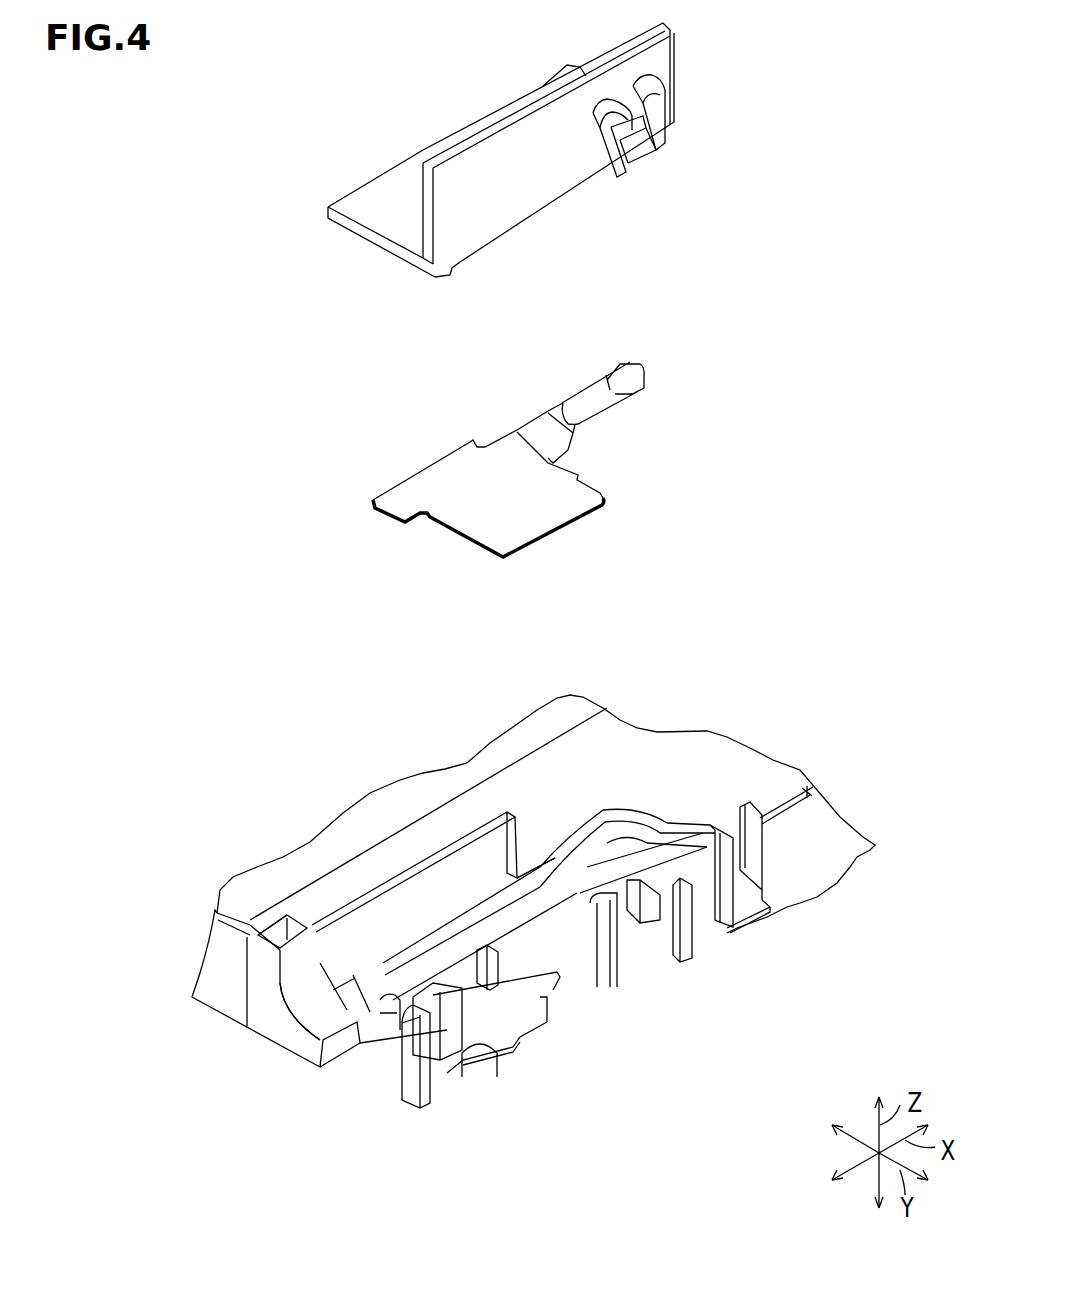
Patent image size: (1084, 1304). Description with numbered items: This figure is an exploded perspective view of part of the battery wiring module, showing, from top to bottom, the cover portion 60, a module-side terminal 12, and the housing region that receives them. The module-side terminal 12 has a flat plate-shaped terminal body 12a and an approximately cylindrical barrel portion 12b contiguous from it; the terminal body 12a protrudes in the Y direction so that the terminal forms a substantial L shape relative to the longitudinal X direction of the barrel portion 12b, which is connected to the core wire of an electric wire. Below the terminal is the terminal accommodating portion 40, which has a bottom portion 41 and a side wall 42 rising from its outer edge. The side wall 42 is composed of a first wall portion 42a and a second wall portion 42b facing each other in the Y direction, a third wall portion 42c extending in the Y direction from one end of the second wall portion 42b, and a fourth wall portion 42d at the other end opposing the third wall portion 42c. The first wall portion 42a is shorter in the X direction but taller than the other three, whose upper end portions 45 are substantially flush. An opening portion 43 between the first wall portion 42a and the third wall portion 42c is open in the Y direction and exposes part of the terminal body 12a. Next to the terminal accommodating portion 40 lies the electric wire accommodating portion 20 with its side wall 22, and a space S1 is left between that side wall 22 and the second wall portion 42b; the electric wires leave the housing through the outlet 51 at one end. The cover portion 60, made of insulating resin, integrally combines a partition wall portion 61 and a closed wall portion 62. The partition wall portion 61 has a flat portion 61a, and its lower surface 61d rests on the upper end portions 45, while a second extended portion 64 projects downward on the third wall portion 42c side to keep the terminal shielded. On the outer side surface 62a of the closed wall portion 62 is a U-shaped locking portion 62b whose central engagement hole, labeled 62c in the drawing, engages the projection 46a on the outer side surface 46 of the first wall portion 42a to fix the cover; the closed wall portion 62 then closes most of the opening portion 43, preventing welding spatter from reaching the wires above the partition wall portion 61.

The cover portion 60 is at (373, 178).
The partition wall portion 61 is at (413, 170).
The flat portion 61a is at (357, 203).
The lower surface 61d is at (392, 253).
The closed wall portion 62 is at (530, 183).
The outer side surface 62a is at (552, 122).
The locking portion 62b is at (673, 135).
The clip inner recess 62c is at (653, 105).
The second extended portion 64 is at (460, 273).
The module-side terminal 12 is at (518, 420).
The terminal body 12a is at (432, 477).
The barrel portion 12b is at (620, 362).
The electric wire accommodating portion 20 is at (712, 745).
The side wall 22 is at (470, 830).
The upper end portions 45 is at (400, 987).
The outlet 51 is at (310, 983).
The space S1 is at (536, 895).
The side wall 42 is at (580, 880).
The first wall portion 42a is at (700, 905).
The second wall portion 42b is at (607, 870).
The third wall portion 42c is at (372, 1030).
The fourth wall portion 42d is at (660, 860).
The terminal accommodating portion 40 is at (640, 850).
The bottom portion 41 is at (513, 1010).
The opening portion 43 is at (495, 1067).
The outer side surface 46 is at (660, 947).
The projection 46a is at (648, 917).